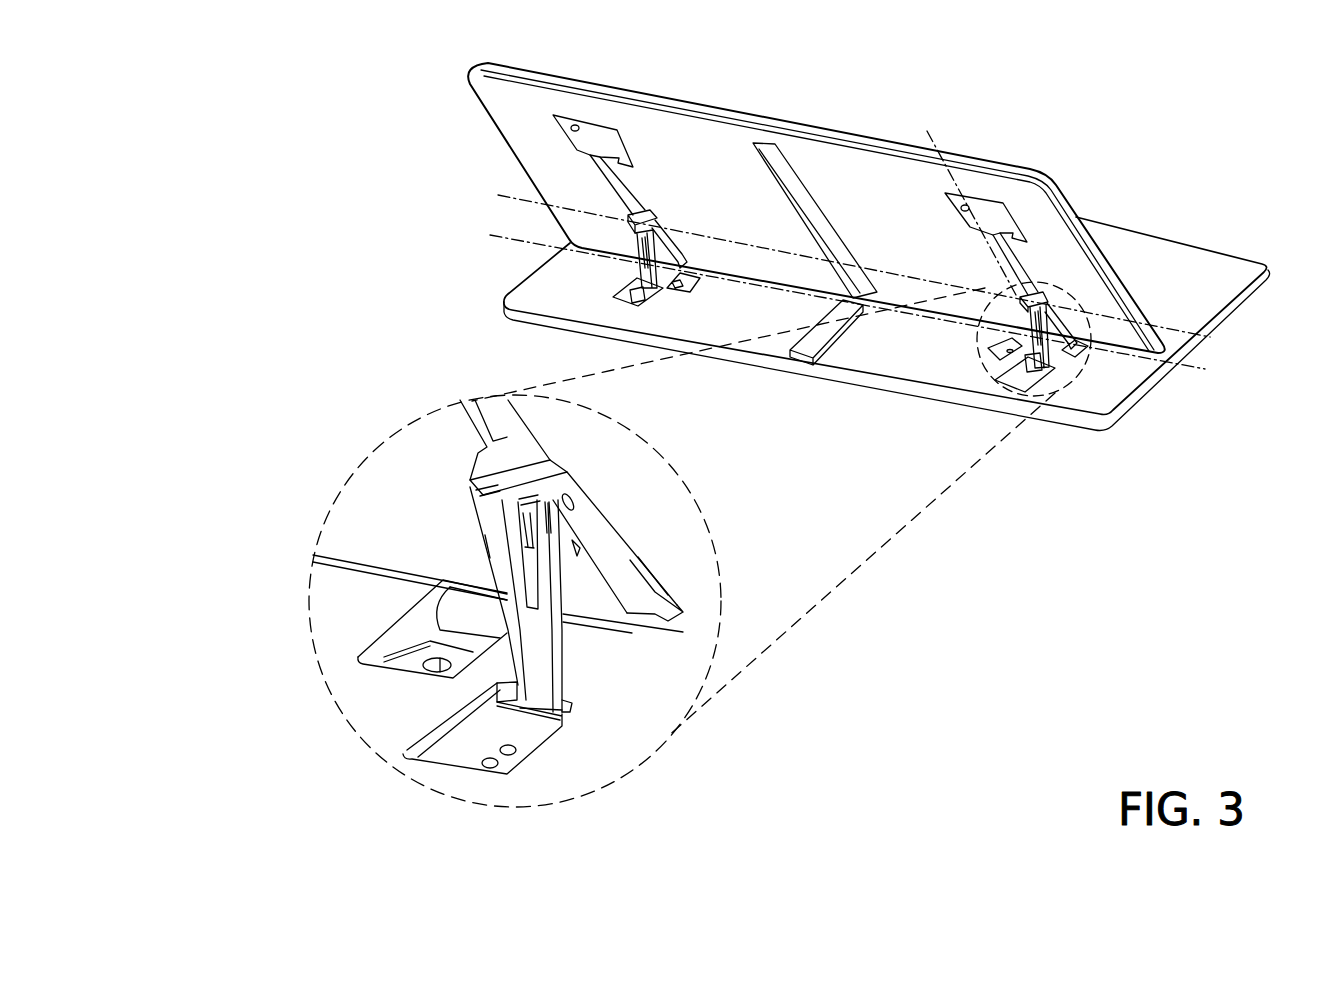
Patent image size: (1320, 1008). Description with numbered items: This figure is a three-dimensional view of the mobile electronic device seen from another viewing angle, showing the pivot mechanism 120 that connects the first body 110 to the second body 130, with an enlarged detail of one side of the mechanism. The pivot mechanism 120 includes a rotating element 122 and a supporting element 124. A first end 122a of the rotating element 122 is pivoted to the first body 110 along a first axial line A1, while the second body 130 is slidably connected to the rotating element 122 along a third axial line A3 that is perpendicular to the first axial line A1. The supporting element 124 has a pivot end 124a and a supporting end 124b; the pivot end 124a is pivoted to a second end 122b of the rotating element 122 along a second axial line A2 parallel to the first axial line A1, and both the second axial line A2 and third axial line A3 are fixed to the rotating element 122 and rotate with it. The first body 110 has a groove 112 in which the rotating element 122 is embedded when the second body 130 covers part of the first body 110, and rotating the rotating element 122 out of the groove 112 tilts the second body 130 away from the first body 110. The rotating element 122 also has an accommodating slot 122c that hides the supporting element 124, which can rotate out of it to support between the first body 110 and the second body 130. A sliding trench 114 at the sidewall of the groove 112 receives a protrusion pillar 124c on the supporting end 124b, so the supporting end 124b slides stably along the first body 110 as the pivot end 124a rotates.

The first body 110 is at (1215, 255).
The groove 112 is at (448, 732).
The sliding trench 114 is at (585, 571).
The pivot mechanism 120 is at (974, 309).
The rotating element 122 is at (598, 539).
The first end 122a is at (662, 644).
The second end 122b is at (584, 485).
The accommodating slot 122c is at (563, 670).
The supporting element 124 is at (538, 650).
The pivot end 124a is at (490, 547).
The supporting end 124b is at (508, 679).
The protrusion pillar 124c is at (510, 698).
The second body 130 is at (1020, 203).
The first axial line A1 is at (1205, 369).
The second axial line A2 is at (1210, 337).
The third axial line A3 is at (927, 131).